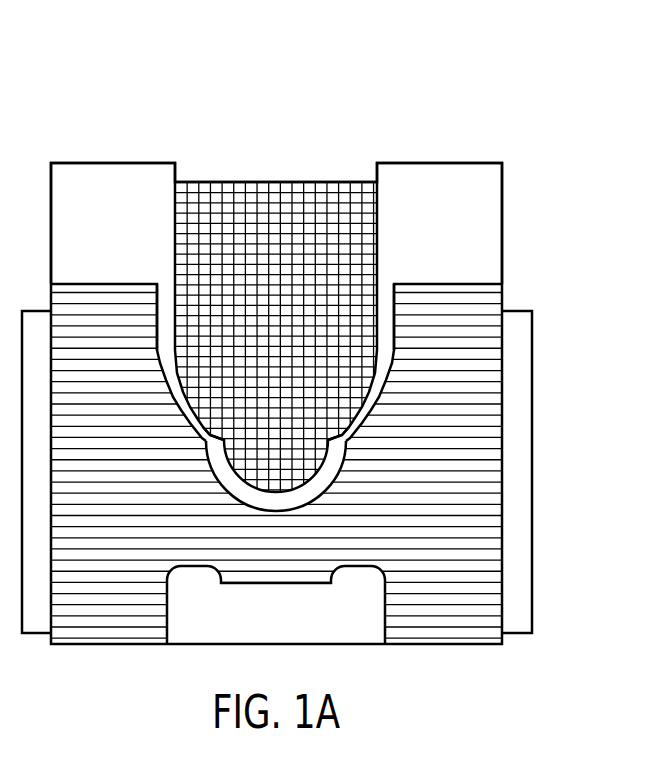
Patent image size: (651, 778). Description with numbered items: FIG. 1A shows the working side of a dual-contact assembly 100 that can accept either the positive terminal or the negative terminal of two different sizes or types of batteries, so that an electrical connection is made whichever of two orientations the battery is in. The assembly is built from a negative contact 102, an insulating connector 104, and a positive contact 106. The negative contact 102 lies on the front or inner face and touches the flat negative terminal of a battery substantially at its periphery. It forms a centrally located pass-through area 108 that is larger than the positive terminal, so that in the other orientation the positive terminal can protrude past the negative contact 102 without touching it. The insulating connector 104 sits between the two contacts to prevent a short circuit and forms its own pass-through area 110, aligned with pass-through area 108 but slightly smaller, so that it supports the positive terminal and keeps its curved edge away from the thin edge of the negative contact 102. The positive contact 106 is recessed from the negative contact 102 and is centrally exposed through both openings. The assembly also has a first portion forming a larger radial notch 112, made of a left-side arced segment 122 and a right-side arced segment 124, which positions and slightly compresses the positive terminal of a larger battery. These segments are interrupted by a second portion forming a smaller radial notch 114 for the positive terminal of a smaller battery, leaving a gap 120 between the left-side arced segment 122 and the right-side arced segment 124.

The dual-contact assembly 100 is at (508, 42).
The negative contact 102 is at (137, 284).
The insulating connector 104 is at (118, 163).
The positive contact 106 is at (258, 182).
The pass-through area 108 is at (391, 261).
The pass-through area 110 is at (365, 147).
The larger radial notch 112 is at (176, 374).
The smaller radial notch 114 is at (235, 495).
The gap 120 is at (269, 428).
The left-side arced segment 122 is at (198, 440).
The right-side arced segment 124 is at (354, 440).